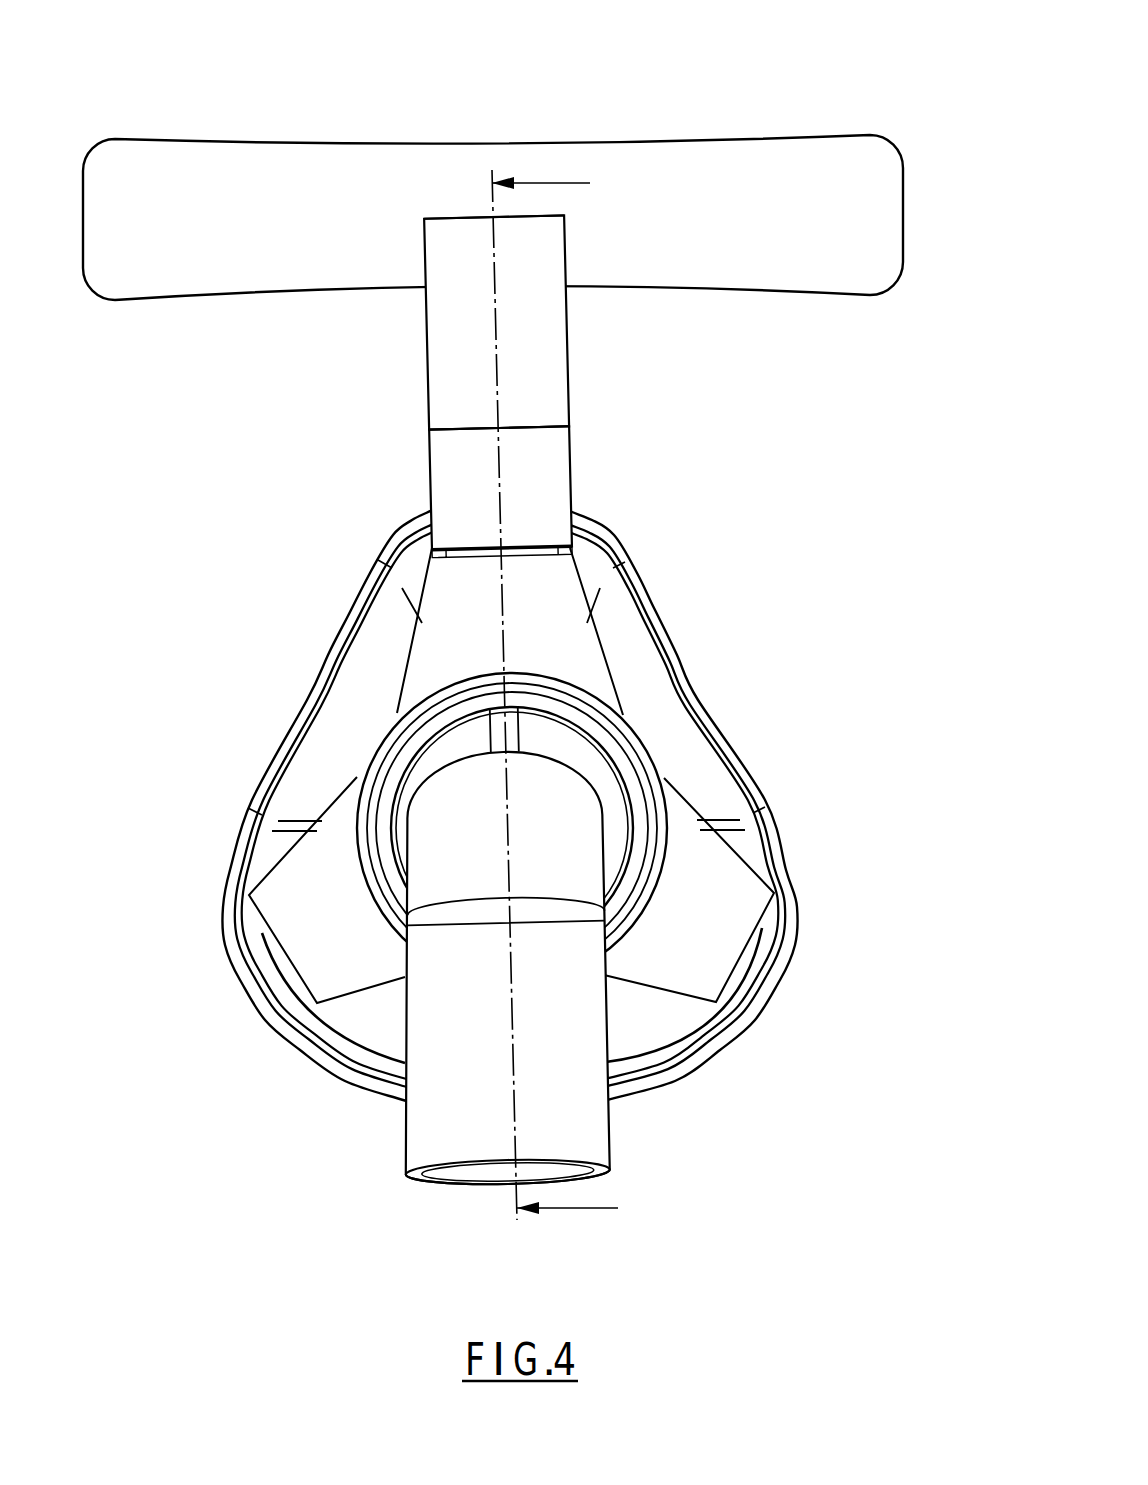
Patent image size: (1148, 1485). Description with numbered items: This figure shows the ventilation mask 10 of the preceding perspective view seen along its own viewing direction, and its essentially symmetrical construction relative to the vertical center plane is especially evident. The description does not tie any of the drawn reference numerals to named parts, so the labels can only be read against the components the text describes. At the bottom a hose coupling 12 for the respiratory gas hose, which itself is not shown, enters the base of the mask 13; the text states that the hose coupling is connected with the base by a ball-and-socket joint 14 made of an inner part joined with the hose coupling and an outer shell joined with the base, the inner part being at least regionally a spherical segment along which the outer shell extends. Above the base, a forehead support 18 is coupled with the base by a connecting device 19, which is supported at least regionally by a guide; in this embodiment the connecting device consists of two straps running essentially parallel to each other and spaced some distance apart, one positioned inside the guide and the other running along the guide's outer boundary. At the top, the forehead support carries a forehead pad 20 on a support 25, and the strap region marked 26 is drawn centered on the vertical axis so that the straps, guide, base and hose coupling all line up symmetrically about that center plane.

The respiratory mask assembly 10 is at (788, 679).
The connection tube 12 is at (593, 1130).
The mask frame 13 is at (747, 845).
The swivel ring 14 is at (419, 757).
The forehead support 18 is at (627, 399).
The yoke bracket 19 is at (567, 607).
The forehead pad 20 is at (270, 156).
The upper post section 25 is at (557, 330).
The lower post section 26 is at (452, 482).